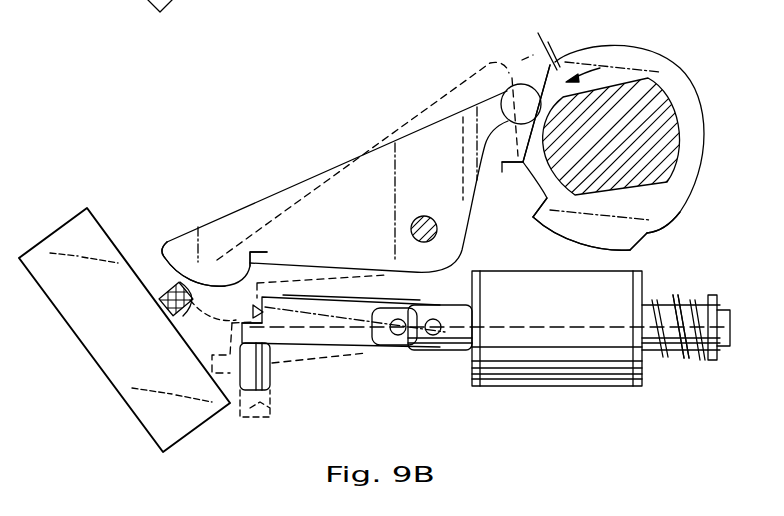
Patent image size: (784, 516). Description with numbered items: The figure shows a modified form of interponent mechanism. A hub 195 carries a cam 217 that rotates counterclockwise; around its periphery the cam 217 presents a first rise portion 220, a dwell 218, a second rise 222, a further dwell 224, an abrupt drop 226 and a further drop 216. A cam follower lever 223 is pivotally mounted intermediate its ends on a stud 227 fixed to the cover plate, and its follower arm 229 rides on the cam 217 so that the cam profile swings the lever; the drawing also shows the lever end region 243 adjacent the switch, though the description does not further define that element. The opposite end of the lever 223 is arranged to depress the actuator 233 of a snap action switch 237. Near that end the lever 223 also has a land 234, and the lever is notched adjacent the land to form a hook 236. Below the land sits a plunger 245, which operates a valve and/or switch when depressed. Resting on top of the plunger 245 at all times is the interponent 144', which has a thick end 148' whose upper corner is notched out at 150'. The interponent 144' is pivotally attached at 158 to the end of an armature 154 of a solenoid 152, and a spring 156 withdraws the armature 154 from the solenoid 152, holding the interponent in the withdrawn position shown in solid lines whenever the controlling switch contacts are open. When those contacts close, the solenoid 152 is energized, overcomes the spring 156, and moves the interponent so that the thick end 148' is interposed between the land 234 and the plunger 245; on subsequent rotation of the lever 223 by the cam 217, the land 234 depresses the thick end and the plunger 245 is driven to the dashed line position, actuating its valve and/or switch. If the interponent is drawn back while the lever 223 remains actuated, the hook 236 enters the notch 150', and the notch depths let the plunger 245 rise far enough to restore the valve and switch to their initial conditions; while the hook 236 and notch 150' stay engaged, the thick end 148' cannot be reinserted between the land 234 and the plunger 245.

The interponent 144' is at (343, 345).
The thick end of interponent 148' is at (326, 299).
The notch 150' is at (265, 345).
The solenoid 152 is at (542, 353).
The armature 154 is at (658, 306).
The spring 156 is at (686, 352).
The pivotal attachment 158 is at (432, 348).
The hub 195 is at (647, 106).
The further drop 216 is at (517, 129).
The cam 217 is at (664, 191).
The dwell 218 is at (652, 52).
The first rise portion 220 is at (538, 33).
The second rise 222 is at (648, 233).
The cam follower lever 223 is at (302, 182).
The dwell 224 is at (577, 243).
The abrupt drop 226 is at (545, 200).
The stud 227 is at (425, 215).
The follower arm 229 is at (520, 102).
The actuator 233 is at (173, 290).
The land 234 is at (252, 311).
The hook 236 is at (278, 249).
The snap action switch 237 is at (123, 363).
The hub 243 is at (163, 252).
The plunger 245 is at (272, 382).